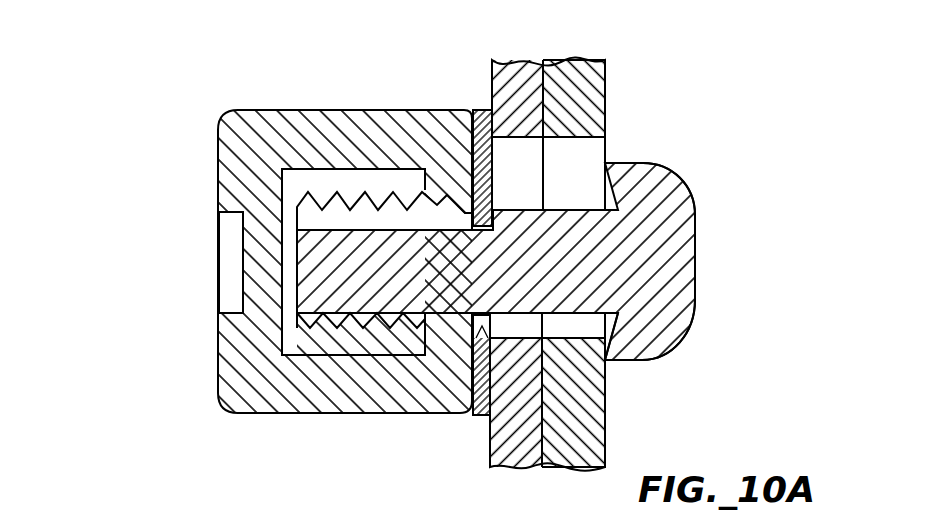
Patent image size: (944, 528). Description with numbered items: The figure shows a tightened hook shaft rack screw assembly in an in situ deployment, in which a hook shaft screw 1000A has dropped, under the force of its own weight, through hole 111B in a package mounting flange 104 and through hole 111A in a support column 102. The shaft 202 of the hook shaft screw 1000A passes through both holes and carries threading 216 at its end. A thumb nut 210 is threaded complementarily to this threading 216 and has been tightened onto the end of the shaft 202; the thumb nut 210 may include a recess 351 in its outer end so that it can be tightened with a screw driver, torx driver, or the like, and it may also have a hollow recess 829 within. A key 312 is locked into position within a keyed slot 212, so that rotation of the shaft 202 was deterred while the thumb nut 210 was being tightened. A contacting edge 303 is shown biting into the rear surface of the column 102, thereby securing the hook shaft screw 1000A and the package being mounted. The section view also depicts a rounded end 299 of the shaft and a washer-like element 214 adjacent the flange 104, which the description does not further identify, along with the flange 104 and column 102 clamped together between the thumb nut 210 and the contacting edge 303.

The hook shaft screw 1000A is at (105, 42).
The thumb nut 210 is at (250, 110).
The recess 351 is at (224, 266).
The keyed slot 212 is at (398, 227).
The threading 216 is at (353, 332).
The hollow recess 829 is at (310, 332).
The shaft 202 is at (567, 272).
The rounded shaft end 299 is at (687, 259).
The contacting edge 303 is at (618, 368).
The washer strip 214 is at (484, 112).
The key 312 is at (466, 218).
The package mounting flange 104 is at (508, 61).
The support column 102 is at (583, 61).
The hole 111B is at (537, 170).
The hole 111A is at (595, 198).